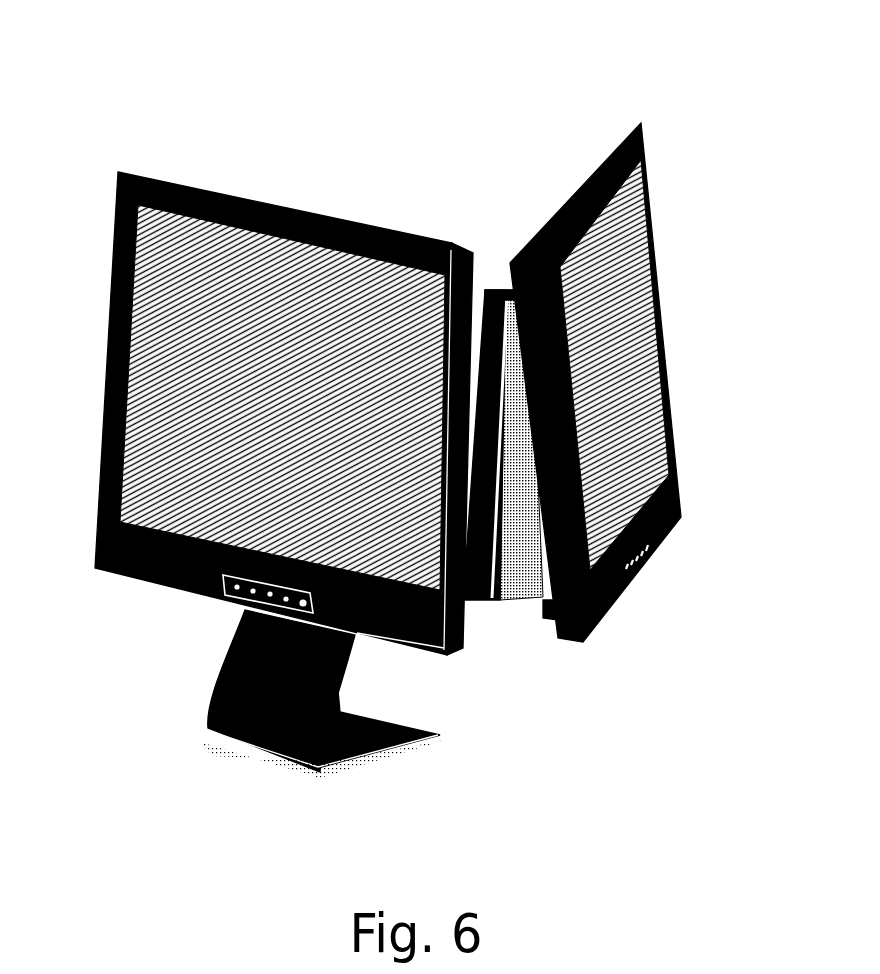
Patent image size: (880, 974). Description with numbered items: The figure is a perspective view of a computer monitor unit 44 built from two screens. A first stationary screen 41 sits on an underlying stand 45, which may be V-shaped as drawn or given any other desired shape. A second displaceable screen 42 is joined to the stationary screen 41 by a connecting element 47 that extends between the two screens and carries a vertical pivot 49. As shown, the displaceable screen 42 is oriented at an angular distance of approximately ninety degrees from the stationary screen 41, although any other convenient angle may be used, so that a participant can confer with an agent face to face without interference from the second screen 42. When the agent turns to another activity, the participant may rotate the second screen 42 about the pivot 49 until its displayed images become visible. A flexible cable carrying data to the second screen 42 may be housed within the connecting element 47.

The first stationary screen 41 is at (152, 375).
The second displaceable screen 42 is at (648, 387).
The monitor unit 44 is at (395, 389).
The stand 45 is at (227, 690).
The connecting element 47 is at (490, 600).
The vertical pivot 49 is at (502, 290).